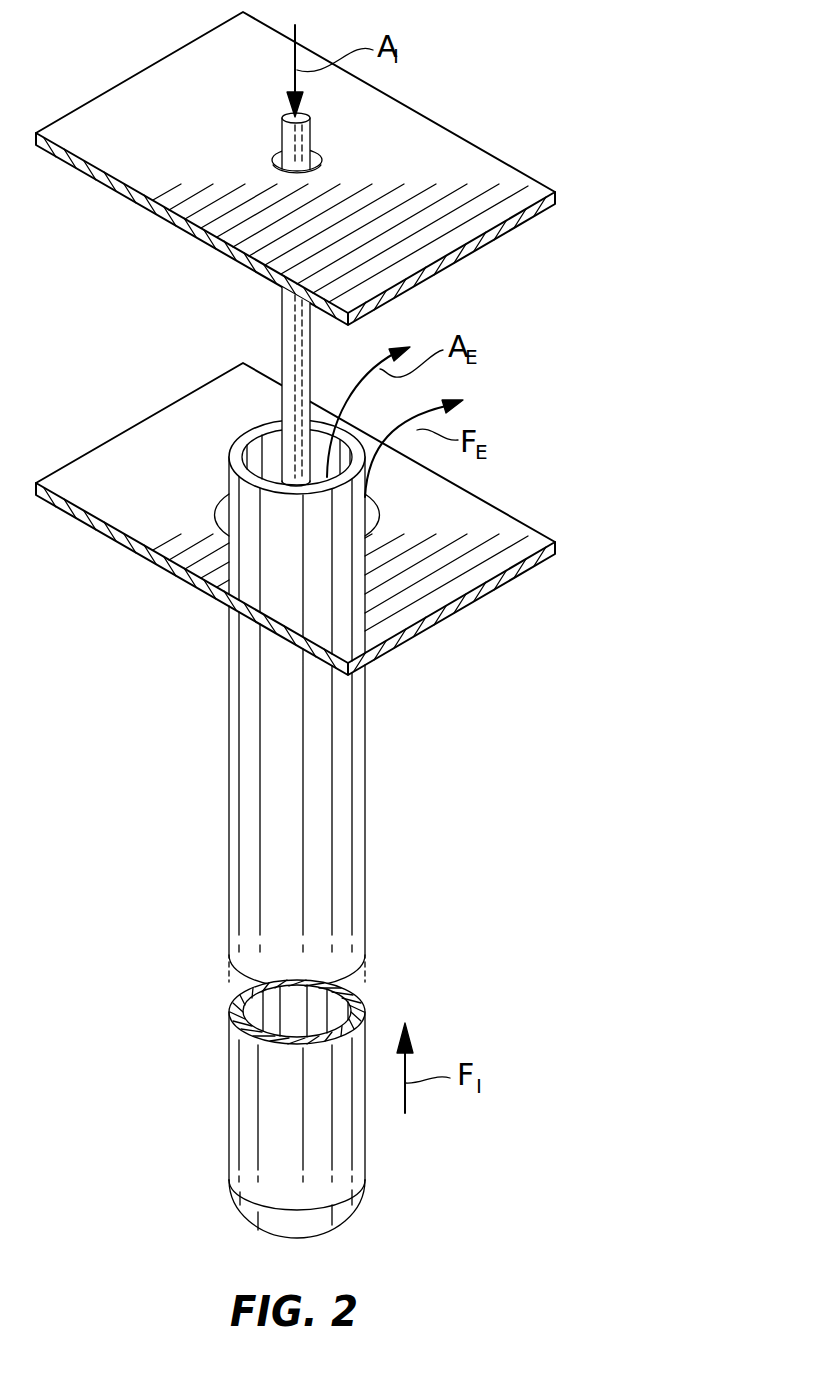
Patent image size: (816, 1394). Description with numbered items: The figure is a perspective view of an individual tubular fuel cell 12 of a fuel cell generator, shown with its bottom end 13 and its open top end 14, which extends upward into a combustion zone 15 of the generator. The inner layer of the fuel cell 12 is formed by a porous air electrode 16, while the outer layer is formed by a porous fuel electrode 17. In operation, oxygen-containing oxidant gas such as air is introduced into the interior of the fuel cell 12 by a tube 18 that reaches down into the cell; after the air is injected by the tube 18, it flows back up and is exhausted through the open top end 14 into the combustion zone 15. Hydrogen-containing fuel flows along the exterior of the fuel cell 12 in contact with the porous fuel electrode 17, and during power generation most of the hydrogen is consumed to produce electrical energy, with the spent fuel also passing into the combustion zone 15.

The tubular fuel cell 12 is at (343, 920).
The bottom end 13 is at (337, 1223).
The top end 14 is at (240, 453).
The combustion zone 15 is at (568, 198).
The porous air electrode 16 is at (262, 450).
The porous fuel electrode 17 is at (237, 520).
The tube 18 is at (290, 321).